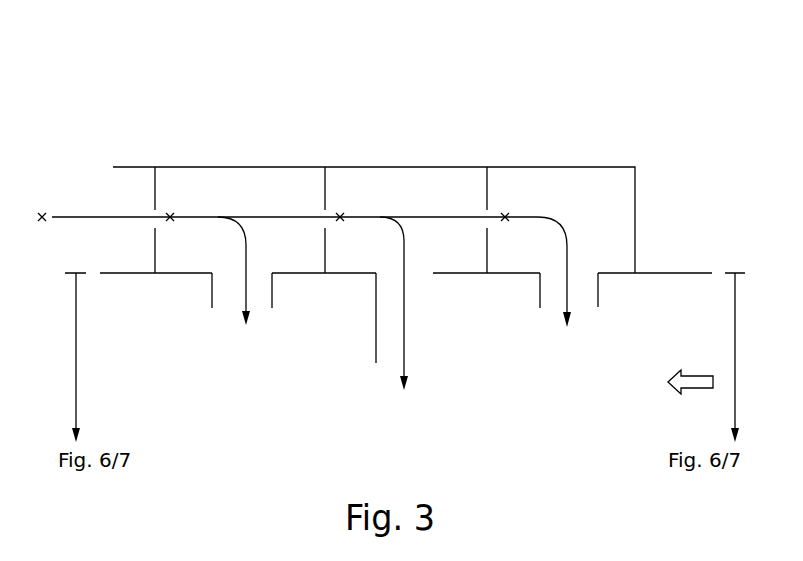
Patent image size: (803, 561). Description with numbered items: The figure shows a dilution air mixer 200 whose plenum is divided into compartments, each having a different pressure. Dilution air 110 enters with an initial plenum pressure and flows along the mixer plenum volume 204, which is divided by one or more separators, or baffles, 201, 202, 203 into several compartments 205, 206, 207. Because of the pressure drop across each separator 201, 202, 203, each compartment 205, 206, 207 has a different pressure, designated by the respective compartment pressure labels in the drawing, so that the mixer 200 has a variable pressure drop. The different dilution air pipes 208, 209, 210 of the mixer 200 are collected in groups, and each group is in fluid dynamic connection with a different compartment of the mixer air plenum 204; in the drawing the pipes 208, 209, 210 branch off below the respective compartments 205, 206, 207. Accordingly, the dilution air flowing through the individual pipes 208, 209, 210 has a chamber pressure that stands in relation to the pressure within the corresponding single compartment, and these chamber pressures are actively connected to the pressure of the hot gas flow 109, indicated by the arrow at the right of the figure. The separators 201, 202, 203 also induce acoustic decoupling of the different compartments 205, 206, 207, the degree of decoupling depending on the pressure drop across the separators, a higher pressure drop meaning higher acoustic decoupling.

The dilution air mixer 200 is at (470, 130).
The separator 201 is at (158, 173).
The separator 202 is at (328, 175).
The separator 203 is at (490, 175).
The mixer plenum volume 204 is at (300, 266).
The compartment 205 is at (226, 200).
The compartment 206 is at (399, 200).
The compartment 207 is at (563, 199).
The dilution air pipe 208 is at (220, 292).
The dilution air pipe 209 is at (388, 362).
The dilution air pipe 210 is at (587, 310).
The dilution air 110 is at (78, 219).
The hot gas flow 109 is at (670, 384).